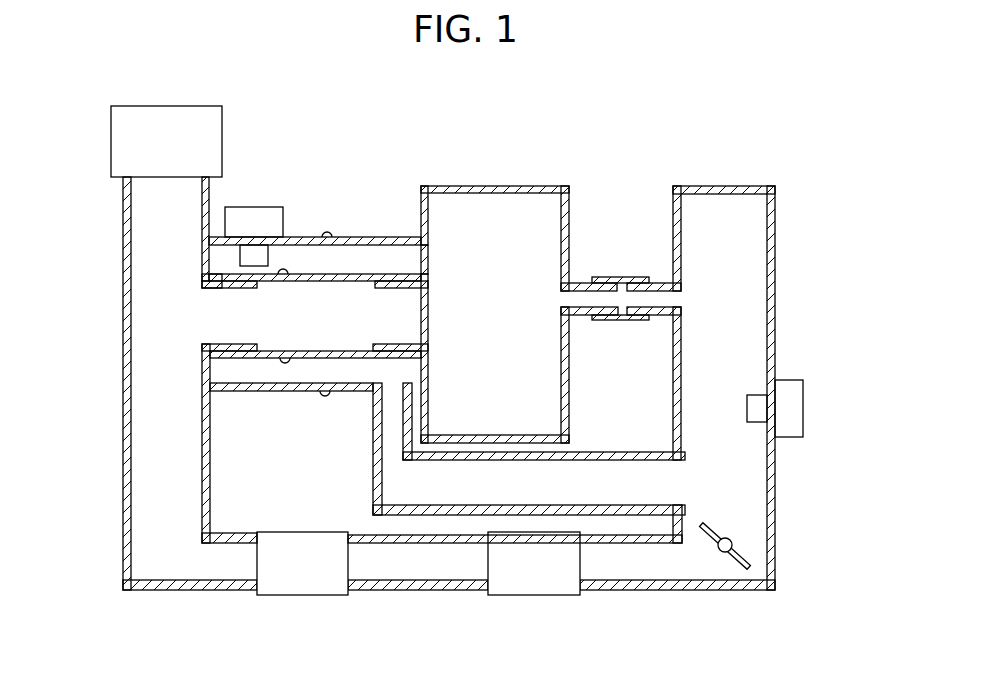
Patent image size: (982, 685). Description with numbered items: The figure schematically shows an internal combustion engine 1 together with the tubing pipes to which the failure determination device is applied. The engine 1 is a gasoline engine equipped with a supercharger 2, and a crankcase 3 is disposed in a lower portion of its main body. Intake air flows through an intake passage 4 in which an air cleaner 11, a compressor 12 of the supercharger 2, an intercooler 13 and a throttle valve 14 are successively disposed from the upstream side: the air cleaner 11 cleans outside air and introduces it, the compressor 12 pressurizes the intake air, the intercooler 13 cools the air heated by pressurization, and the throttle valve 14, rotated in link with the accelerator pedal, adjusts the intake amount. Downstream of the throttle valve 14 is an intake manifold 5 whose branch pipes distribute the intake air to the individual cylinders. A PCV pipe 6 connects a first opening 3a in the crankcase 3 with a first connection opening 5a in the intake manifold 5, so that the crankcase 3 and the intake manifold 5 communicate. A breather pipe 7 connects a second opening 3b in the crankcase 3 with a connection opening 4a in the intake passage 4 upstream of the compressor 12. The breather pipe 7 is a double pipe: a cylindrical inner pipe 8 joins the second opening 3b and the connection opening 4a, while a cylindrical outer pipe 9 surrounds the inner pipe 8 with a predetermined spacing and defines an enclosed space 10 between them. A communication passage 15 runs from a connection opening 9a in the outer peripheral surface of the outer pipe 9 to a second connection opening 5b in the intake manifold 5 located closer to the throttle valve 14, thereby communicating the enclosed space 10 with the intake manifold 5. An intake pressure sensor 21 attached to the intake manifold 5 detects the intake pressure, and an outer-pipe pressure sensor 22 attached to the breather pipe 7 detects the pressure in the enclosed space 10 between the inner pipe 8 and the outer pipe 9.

The internal combustion engine 1 is at (565, 148).
The supercharger 2 is at (293, 605).
The crankcase 3 is at (495, 185).
The first opening 3a is at (583, 282).
The second opening 3b is at (423, 272).
The intake passage 4 is at (112, 432).
The connection opening 4a is at (222, 283).
The intake manifold 5 is at (775, 280).
The first connection opening 5a is at (658, 282).
The second connection opening 5b is at (677, 487).
The PCV pipe 6 is at (625, 277).
The breather pipe 7 is at (378, 225).
The inner pipe 8 is at (278, 274).
The outer pipe 9 is at (318, 240).
The enclosed space 10 is at (355, 257).
The connection opening 9a is at (392, 390).
The air cleaner 11 is at (111, 133).
The compressor 12 is at (307, 532).
The intercooler 13 is at (533, 596).
The throttle valve 14 is at (732, 545).
The communication passage 15 is at (597, 452).
The intake pressure sensor 21 is at (803, 408).
The outer-pipe pressure sensor 22 is at (256, 207).